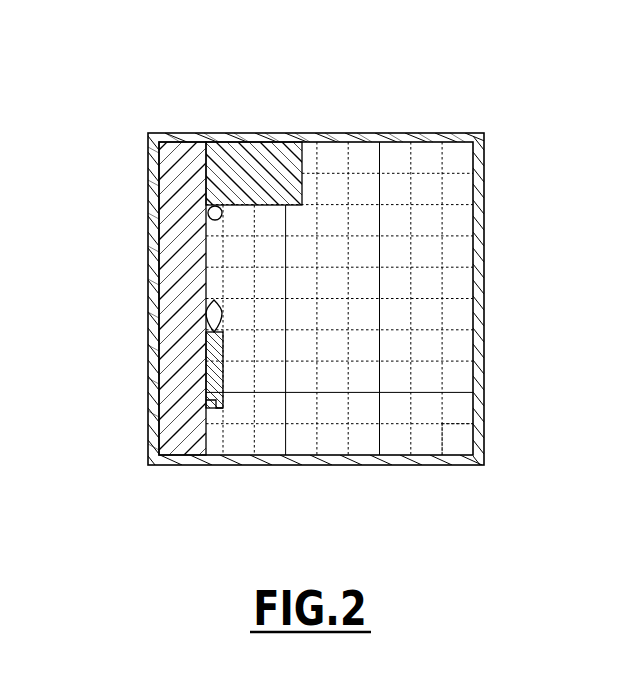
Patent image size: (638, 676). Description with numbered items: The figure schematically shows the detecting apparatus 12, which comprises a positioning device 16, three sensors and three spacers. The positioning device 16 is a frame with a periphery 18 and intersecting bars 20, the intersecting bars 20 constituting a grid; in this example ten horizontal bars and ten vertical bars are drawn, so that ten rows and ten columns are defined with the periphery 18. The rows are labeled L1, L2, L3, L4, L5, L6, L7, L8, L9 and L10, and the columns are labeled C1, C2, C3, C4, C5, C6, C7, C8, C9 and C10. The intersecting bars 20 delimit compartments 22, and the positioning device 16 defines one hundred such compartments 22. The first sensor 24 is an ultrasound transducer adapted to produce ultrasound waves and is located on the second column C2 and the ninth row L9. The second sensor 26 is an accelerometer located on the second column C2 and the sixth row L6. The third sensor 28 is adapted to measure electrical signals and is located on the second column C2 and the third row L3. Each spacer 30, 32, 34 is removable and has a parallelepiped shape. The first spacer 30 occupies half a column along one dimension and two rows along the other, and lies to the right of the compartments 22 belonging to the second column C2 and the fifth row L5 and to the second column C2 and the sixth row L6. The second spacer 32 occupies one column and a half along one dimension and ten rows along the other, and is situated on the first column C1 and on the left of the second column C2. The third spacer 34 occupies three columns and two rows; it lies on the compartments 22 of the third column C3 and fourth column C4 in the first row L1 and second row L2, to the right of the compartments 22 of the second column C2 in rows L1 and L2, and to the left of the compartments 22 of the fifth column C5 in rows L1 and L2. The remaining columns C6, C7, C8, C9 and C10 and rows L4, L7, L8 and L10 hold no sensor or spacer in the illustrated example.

The detecting apparatus 12 is at (512, 84).
The positioning device 16 is at (427, 488).
The periphery 18 is at (478, 308).
The intersecting bars 20 is at (455, 423).
The compartments 22 is at (360, 450).
The first sensor 24 is at (213, 410).
The second sensor 26 is at (222, 308).
The third sensor 28 is at (222, 215).
The first spacer 30 is at (222, 376).
The second spacer 32 is at (178, 440).
The third spacer 34 is at (302, 183).
The first row L1 is at (137, 150).
The second row L2 is at (137, 183).
The third row L3 is at (137, 216).
The fourth row L4 is at (137, 249).
The fifth row L5 is at (137, 282).
The sixth row L6 is at (137, 315).
The seventh row L7 is at (137, 348).
The eighth row L8 is at (137, 381).
The ninth row L9 is at (137, 414).
The tenth row L10 is at (137, 447).
The first column C1 is at (172, 119).
The second column C2 is at (211, 119).
The third column C3 is at (241, 119).
The fourth column C4 is at (272, 119).
The fifth column C5 is at (302, 119).
The sixth column C6 is at (332, 119).
The seventh column C7 is at (364, 119).
The eighth column C8 is at (395, 119).
The ninth column C9 is at (425, 119).
The tenth column C10 is at (457, 119).